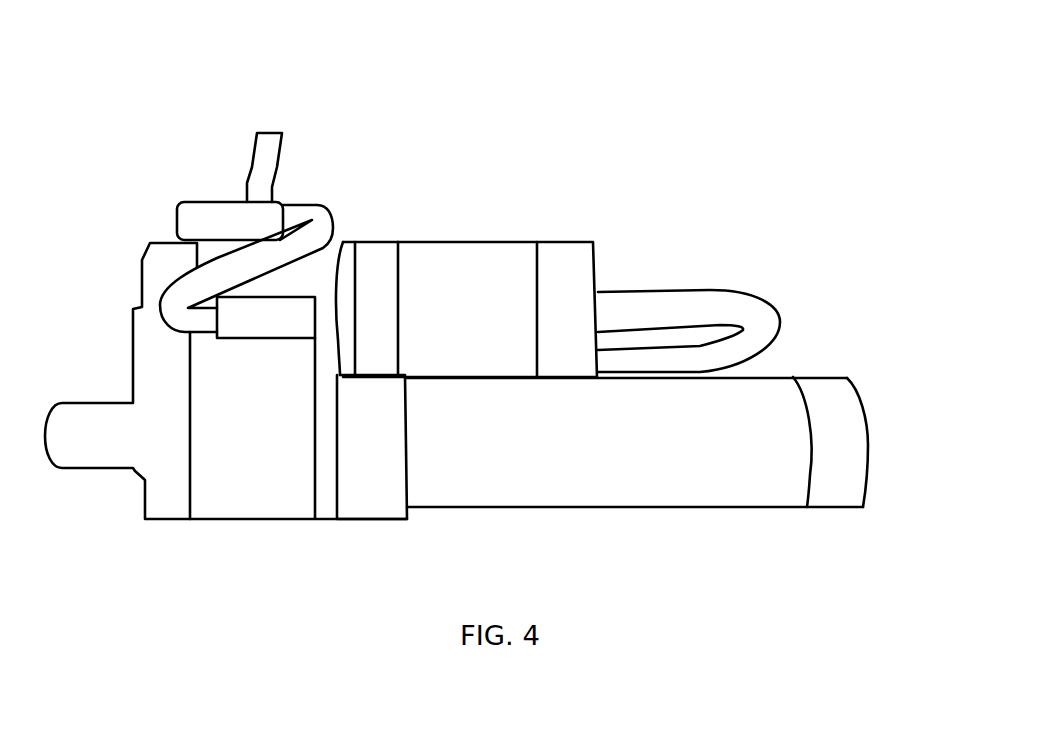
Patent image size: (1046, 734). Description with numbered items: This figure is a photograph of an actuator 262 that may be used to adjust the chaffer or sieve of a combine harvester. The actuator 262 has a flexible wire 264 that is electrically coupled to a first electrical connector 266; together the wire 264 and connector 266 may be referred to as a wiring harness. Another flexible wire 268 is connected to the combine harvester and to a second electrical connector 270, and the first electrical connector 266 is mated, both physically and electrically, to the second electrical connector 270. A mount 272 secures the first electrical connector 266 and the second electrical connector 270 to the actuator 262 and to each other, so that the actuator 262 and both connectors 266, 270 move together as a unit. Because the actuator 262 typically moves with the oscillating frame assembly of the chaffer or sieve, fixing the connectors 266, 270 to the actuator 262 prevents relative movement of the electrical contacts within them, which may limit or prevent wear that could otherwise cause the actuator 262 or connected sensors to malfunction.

The actuator 262 is at (257, 487).
The flexible wire 264 is at (222, 220).
The first electrical connector 266 is at (380, 312).
The flexible wire 268 is at (715, 308).
The second electrical connector 270 is at (570, 313).
The mount 272 is at (483, 278).